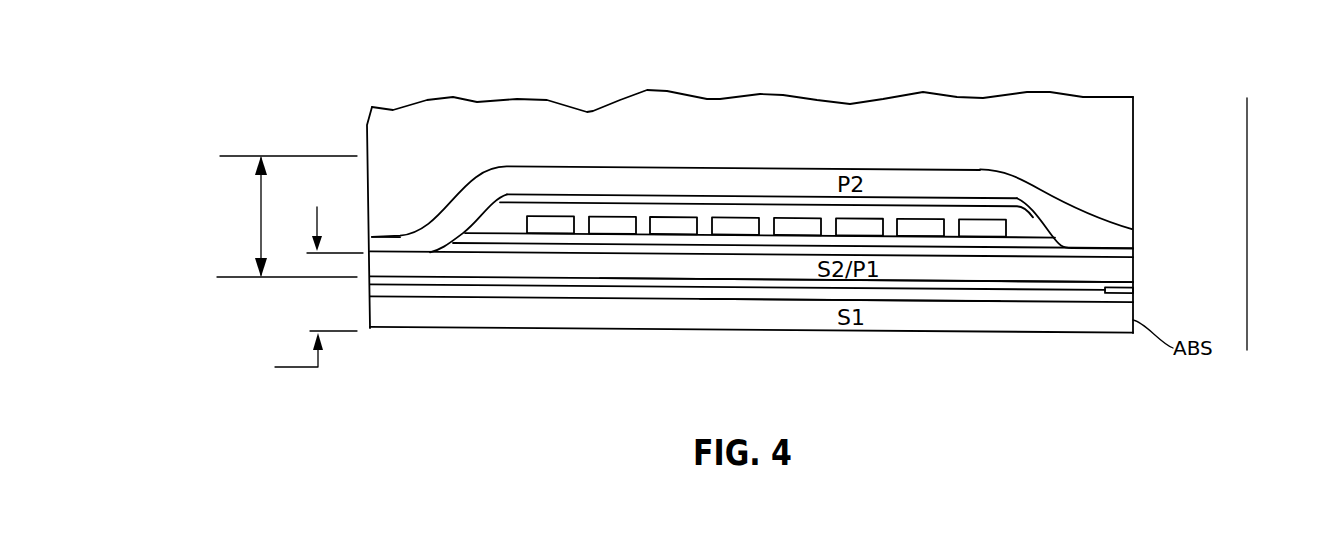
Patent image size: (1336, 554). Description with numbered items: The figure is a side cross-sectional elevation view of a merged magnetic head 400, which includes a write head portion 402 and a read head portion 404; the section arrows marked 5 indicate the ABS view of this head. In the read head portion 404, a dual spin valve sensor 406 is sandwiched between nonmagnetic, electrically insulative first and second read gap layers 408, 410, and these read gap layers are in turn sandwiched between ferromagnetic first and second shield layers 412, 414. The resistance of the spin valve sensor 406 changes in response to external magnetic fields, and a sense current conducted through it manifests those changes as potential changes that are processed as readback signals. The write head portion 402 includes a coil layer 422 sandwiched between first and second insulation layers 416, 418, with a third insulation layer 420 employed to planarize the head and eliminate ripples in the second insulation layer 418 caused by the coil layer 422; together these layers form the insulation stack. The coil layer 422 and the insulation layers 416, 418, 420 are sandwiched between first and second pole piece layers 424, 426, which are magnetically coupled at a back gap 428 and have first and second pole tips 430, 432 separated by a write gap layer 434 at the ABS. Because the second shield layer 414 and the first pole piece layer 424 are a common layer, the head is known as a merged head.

The merged magnetic head 400 is at (332, 120).
The write head portion 402 is at (249, 216).
The read head portion 404 is at (262, 377).
The dual spin valve sensor 406 is at (1133, 290).
The first read gap layer 408 is at (815, 300).
The second read gap layer 410 is at (773, 281).
The first shield layer 412 is at (883, 317).
The second shield layer 414 is at (982, 273).
The first pole piece layer 424 is at (1060, 334).
The first insulation layer 416 is at (681, 240).
The second insulation layer 418 is at (1022, 222).
The third insulation layer 420 is at (578, 195).
The coil layer 422 is at (797, 225).
The second pole piece layer 426 is at (898, 180).
The back gap 428 is at (403, 252).
The first pole tip 430 is at (1128, 270).
The second pole tip 432 is at (1127, 239).
The write gap layer 434 is at (1128, 254).
The section line 5- 5 is at (1300, 340).